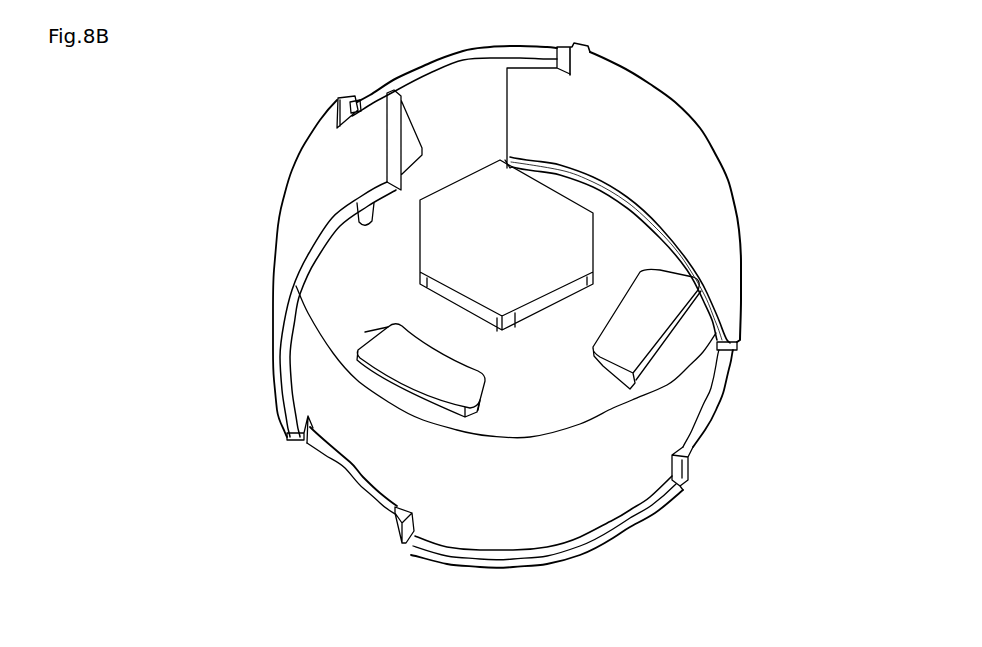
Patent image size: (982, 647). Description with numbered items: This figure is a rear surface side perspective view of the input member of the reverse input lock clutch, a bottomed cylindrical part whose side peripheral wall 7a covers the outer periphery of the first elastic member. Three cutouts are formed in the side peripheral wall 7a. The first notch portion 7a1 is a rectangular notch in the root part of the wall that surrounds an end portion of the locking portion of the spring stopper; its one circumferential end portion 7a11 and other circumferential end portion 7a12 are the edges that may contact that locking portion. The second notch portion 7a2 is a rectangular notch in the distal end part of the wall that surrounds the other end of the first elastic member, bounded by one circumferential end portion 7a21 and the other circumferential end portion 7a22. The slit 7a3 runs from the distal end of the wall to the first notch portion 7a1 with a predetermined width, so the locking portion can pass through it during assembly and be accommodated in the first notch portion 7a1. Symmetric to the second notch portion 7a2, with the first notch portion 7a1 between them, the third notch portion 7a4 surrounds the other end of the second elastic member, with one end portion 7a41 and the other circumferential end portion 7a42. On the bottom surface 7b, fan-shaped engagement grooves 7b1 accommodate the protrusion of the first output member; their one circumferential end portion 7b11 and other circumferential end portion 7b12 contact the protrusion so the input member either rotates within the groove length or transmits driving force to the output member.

The side peripheral wall 7a is at (657, 120).
The first notch portion 7a1 is at (445, 56).
The one circumferential end portion of the first notch portion 7a11 is at (582, 70).
The other circumferential end portion of the first notch portion 7a12 is at (340, 113).
The second notch portion 7a2 is at (342, 473).
The one circumferential end portion of the second notch portion 7a21 is at (400, 530).
The other circumferential end portion of the second notch portion 7a22 is at (313, 443).
The slit 7a3 is at (505, 122).
The third notch portion 7a4 is at (715, 412).
The one end portion of the third notch portion 7a41 is at (693, 470).
The other circumferential end portion of the third notch portion 7a42 is at (727, 352).
The bottom surface 7b is at (632, 247).
The engagement groove 7b1 is at (407, 388).
The one circumferential end portion of the engagement groove 7b11 is at (481, 384).
The other circumferential end portion of the engagement groove 7b12 is at (376, 336).